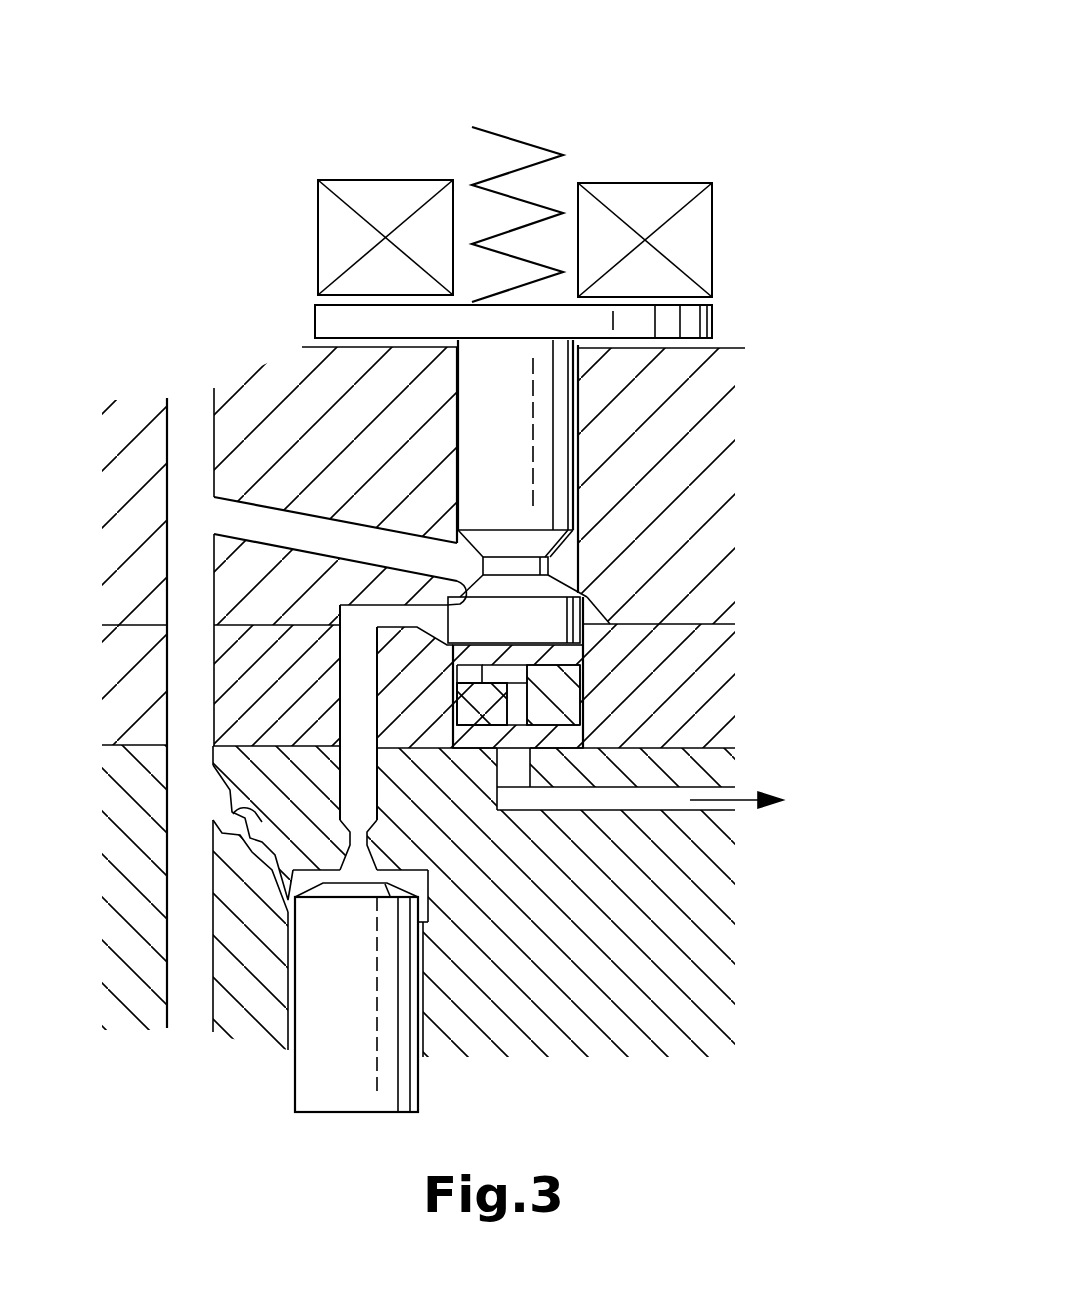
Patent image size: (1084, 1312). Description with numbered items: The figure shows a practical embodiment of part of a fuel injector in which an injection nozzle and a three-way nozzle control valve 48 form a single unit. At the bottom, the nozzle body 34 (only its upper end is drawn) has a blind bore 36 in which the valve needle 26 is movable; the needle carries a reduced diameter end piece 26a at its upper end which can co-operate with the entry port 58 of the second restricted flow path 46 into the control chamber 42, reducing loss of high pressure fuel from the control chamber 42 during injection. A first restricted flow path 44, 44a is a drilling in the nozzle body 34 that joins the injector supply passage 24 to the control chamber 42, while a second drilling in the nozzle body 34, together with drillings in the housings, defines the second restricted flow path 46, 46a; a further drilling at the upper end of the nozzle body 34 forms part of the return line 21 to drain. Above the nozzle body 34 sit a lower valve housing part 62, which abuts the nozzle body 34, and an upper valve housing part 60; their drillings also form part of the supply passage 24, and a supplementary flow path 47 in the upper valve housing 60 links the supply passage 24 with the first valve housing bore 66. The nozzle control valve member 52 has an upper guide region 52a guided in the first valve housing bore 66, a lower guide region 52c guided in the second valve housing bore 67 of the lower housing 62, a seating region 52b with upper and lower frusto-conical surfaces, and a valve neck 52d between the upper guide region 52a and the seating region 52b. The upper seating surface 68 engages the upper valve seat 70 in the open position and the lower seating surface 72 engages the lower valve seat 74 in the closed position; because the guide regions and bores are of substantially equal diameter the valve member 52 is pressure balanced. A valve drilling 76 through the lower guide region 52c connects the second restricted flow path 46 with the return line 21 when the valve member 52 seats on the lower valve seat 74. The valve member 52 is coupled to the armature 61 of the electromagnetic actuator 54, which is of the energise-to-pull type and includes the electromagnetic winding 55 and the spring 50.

The return line 21 is at (645, 810).
The injector supply passage 24 is at (182, 693).
The valve needle 26 is at (425, 997).
The reduced diameter end piece 26a is at (380, 915).
The nozzle body 34 is at (458, 797).
The blind bore 36 is at (295, 985).
The control chamber 42 is at (432, 888).
The first restricted flow path 44 is at (232, 805).
The groove 44a is at (238, 845).
The second restricted flow path 46 is at (360, 712).
The second restricted flow path 46a is at (370, 828).
The supplementary flow path 47 is at (302, 534).
The nozzle control valve 48 is at (385, 415).
The spring 50 is at (505, 137).
The nozzle control valve member 52 is at (554, 544).
The upper guide region 52a is at (477, 398).
The seating region 52b is at (610, 622).
The lower guide region 52c is at (512, 710).
The valve neck 52d is at (530, 565).
The electromagnetic actuator 54 is at (603, 189).
The electromagnetic winding 55 is at (695, 237).
The entry port 58 is at (340, 866).
The upper valve housing part 60 is at (659, 534).
The armature 61 is at (700, 325).
The lower valve housing part 62 is at (714, 669).
The first valve housing bore 66 is at (572, 386).
The second valve housing bore 67 is at (450, 670).
The upper seating surface 68 is at (465, 583).
The upper valve seat 70 is at (456, 598).
The lower seating surface 72 is at (580, 670).
The lower valve seat 74 is at (578, 621).
The valve drilling 76 is at (517, 705).